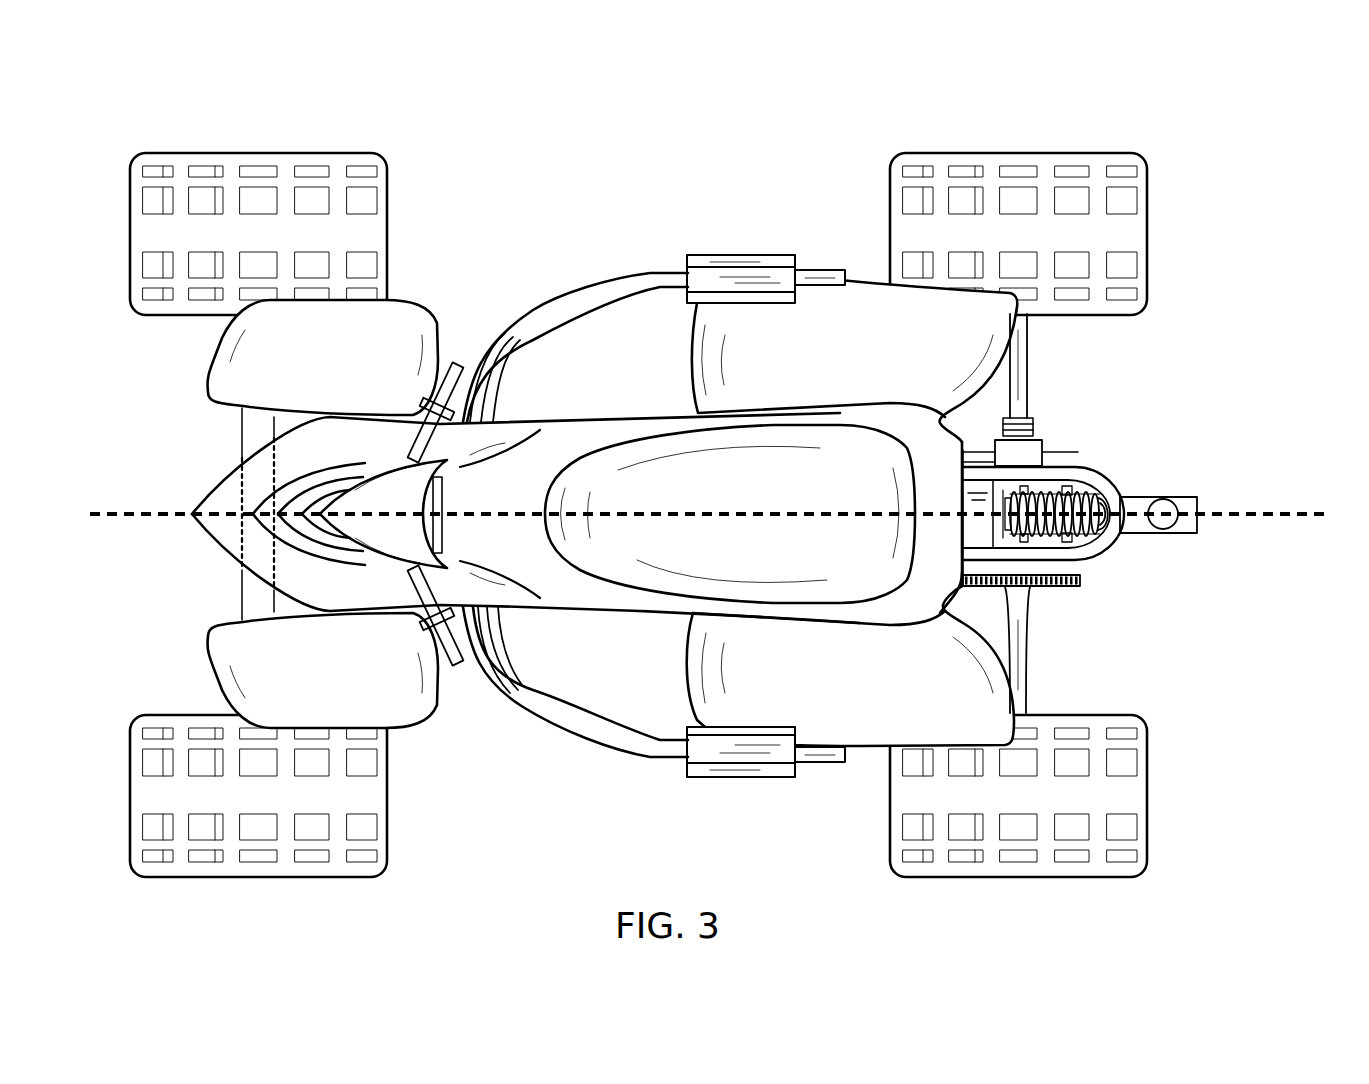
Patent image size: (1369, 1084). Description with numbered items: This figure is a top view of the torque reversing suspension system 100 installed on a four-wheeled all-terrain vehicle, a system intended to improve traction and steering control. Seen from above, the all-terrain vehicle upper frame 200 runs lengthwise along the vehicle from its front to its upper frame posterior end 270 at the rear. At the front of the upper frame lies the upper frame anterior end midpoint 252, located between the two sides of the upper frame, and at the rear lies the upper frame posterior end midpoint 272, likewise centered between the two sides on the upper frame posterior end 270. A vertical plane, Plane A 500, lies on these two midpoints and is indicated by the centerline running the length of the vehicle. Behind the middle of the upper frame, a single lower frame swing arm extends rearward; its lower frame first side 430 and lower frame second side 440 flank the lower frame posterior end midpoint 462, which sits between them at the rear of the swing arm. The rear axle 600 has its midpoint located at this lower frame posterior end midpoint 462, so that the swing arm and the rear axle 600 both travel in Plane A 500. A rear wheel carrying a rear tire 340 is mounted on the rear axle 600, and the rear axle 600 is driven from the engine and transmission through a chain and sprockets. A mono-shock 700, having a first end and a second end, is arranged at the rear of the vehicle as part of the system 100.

The torque reversing suspension system 100 is at (478, 116).
The all-terrain vehicle upper frame 200 is at (995, 452).
The upper frame anterior end midpoint 252 is at (240, 513).
The rear tire 340 is at (1052, 228).
The lower frame second side 440 is at (990, 483).
The mono-shock 700 is at (1092, 493).
The upper frame posterior end 270 is at (1112, 492).
The upper frame posterior end midpoint 272 is at (1157, 497).
The lower frame posterior end midpoint 462 is at (1062, 538).
The lower frame first side 430 is at (1078, 580).
The rear axle 600 is at (1017, 608).
The Plane A 500 is at (532, 518).